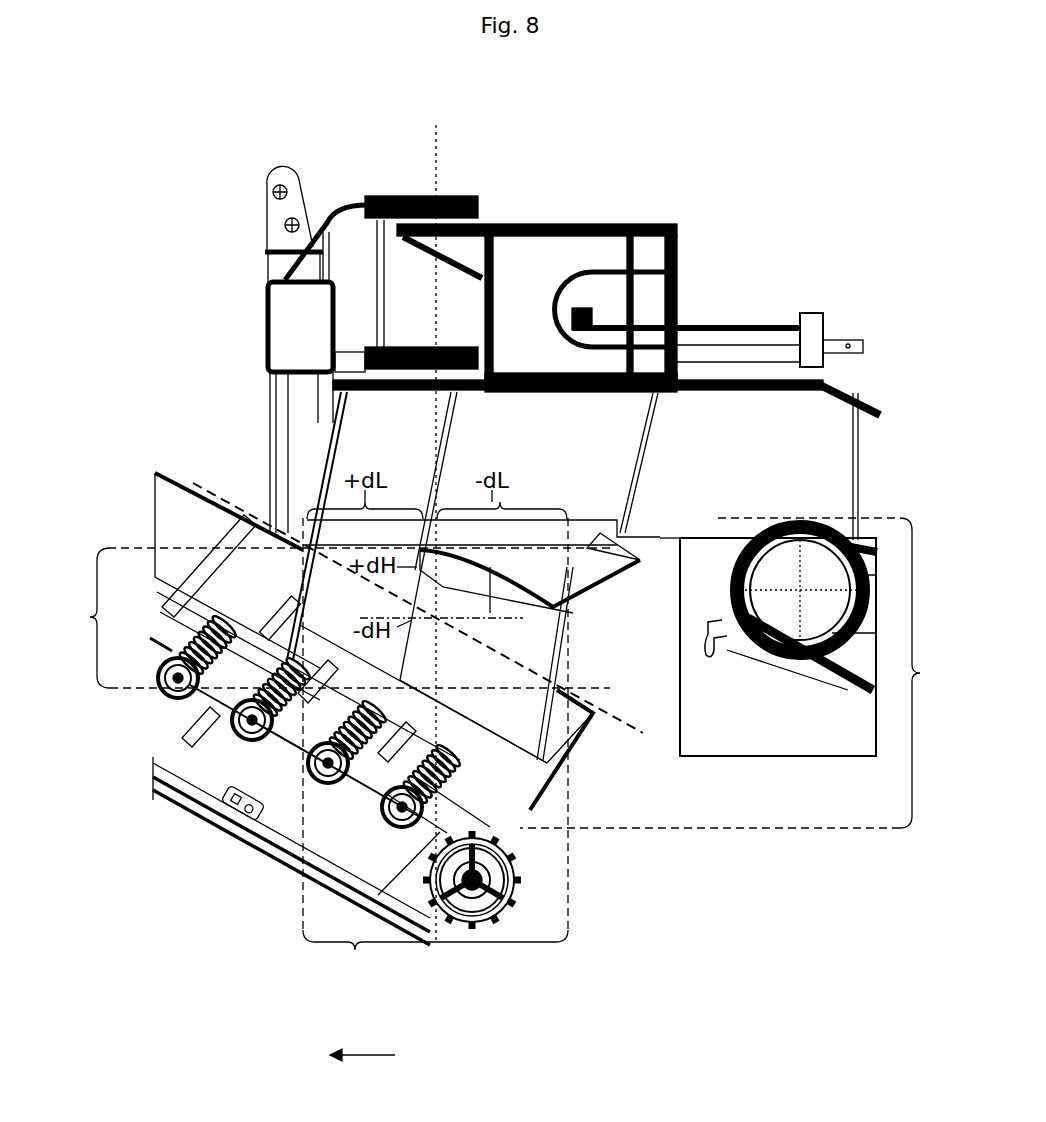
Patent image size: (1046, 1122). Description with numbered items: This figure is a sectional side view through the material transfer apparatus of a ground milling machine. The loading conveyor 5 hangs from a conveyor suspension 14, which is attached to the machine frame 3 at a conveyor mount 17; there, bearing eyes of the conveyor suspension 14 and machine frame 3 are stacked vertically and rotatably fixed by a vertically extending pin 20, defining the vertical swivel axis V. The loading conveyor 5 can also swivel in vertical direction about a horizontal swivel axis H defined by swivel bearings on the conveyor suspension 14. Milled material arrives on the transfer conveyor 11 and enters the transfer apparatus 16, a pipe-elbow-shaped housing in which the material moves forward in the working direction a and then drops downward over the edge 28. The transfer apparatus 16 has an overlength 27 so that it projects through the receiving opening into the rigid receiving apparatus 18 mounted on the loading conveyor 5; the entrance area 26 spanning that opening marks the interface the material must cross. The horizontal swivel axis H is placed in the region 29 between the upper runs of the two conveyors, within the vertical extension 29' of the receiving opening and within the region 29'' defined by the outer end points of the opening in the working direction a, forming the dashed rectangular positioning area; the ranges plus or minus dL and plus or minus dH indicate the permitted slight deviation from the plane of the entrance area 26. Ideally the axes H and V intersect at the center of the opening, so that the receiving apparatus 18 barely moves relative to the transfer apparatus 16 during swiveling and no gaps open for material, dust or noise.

The machine frame 3 is at (528, 227).
The loading conveyor 5 is at (217, 823).
The transfer conveyor 11 is at (833, 637).
The conveyor suspension 14 is at (263, 308).
The transfer apparatus 16 is at (697, 420).
The conveyor mount 17 is at (470, 188).
The receiving apparatus 18 is at (527, 790).
The pin 20 is at (428, 345).
The entrance area 26 is at (565, 640).
The overlength 27 is at (493, 730).
The edge 28 is at (573, 553).
The region 29 is at (740, 673).
The extension of the receiving opening in vertical direction 29' is at (325, 618).
The region in working direction 29'' is at (435, 746).
The vertical swivel axis V is at (440, 128).
The horizontal swivel axis H is at (257, 847).
The working direction a is at (346, 1053).